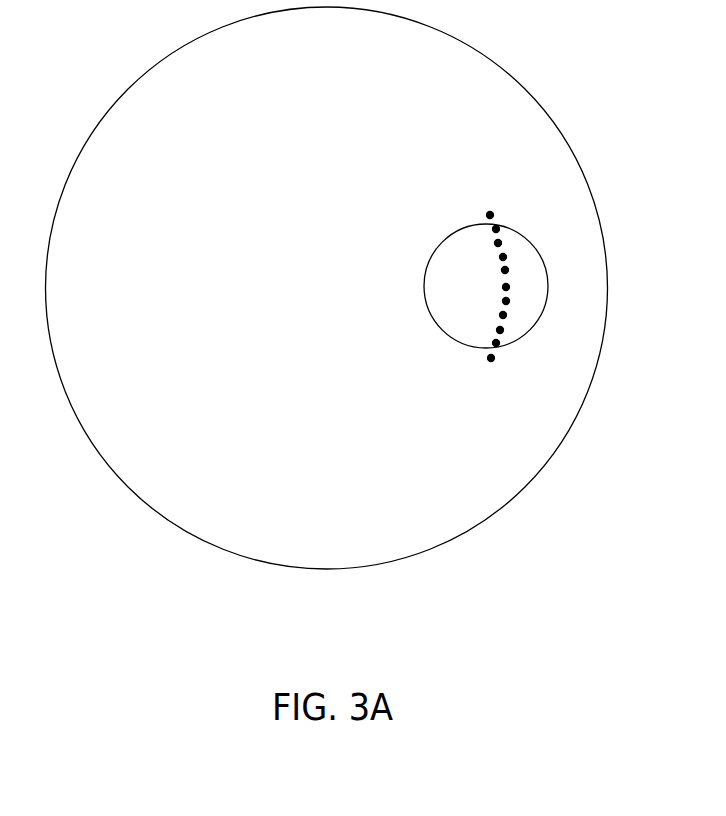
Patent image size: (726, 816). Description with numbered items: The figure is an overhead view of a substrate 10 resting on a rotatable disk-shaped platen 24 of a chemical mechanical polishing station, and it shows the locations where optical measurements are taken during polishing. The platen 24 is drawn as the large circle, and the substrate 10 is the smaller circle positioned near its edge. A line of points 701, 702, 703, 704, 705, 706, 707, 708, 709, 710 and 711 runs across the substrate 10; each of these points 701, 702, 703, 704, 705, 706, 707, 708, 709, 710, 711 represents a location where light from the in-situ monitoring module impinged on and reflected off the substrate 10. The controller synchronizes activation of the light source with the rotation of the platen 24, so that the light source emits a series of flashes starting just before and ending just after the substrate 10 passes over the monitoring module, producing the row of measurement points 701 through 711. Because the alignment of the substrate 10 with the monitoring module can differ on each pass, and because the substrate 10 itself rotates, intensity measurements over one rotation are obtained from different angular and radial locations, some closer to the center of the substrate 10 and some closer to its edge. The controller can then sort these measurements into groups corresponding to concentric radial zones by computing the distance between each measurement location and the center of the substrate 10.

The substrate 10 is at (458, 343).
The platen 24 is at (342, 527).
The measurement point 701 is at (491, 358).
The measurement point 702 is at (496, 343).
The measurement point 703 is at (500, 330).
The measurement point 704 is at (503, 315).
The measurement point 705 is at (506, 301).
The measurement point 706 is at (506, 287).
The measurement point 707 is at (505, 270).
The measurement point 708 is at (503, 257).
The measurement point 709 is at (498, 243).
The measurement point 710 is at (496, 229).
The measurement point 711 is at (490, 215).